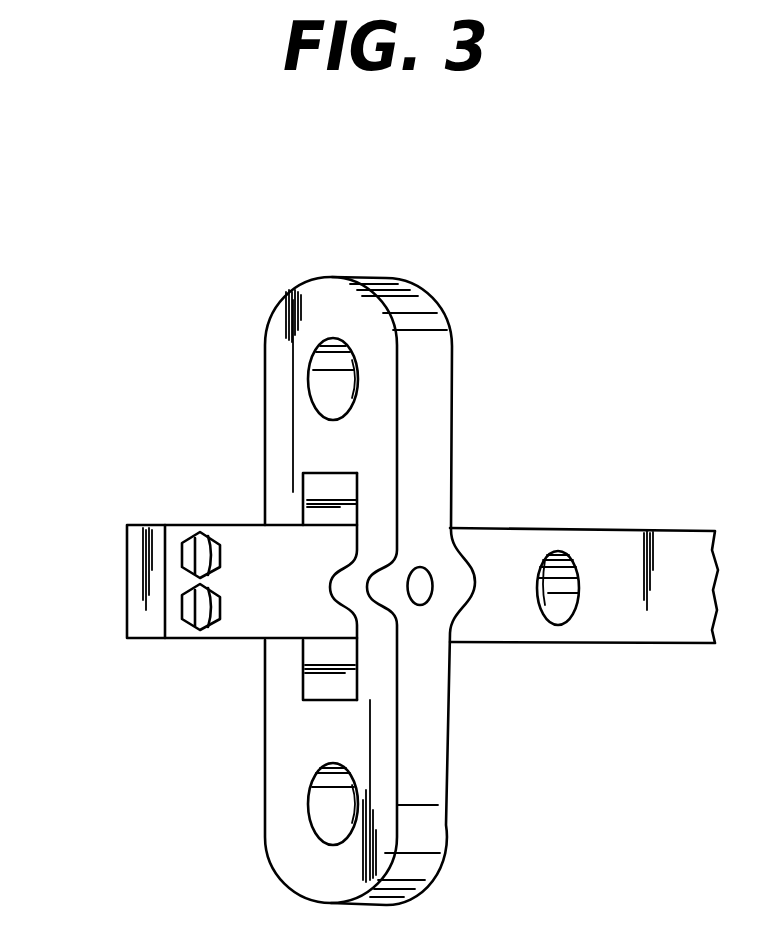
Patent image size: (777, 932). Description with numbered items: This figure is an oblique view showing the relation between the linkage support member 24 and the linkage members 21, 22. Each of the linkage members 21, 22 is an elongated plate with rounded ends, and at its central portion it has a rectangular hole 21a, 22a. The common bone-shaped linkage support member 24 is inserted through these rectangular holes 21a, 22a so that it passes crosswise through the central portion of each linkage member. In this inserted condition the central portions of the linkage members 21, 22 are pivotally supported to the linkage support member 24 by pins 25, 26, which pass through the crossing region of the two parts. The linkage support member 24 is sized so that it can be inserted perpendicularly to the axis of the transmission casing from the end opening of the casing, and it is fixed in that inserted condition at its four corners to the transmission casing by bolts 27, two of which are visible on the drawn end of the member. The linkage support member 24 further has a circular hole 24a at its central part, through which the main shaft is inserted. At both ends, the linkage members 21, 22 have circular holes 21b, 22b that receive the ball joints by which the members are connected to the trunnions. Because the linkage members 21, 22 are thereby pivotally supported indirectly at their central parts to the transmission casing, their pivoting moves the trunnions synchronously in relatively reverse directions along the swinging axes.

The linkage member 21 is at (343, 591).
The linkage member 22 is at (443, 408).
The rectangular hole 21a is at (218, 604).
The rectangular hole 22a is at (303, 664).
The circular hole 21b is at (457, 584).
The circular hole 22b is at (337, 361).
The linkage support member 24 is at (136, 601).
The circular hole 24a is at (568, 608).
The pin 25 is at (509, 538).
The pin 26 is at (422, 578).
The bolt 27 is at (193, 593).